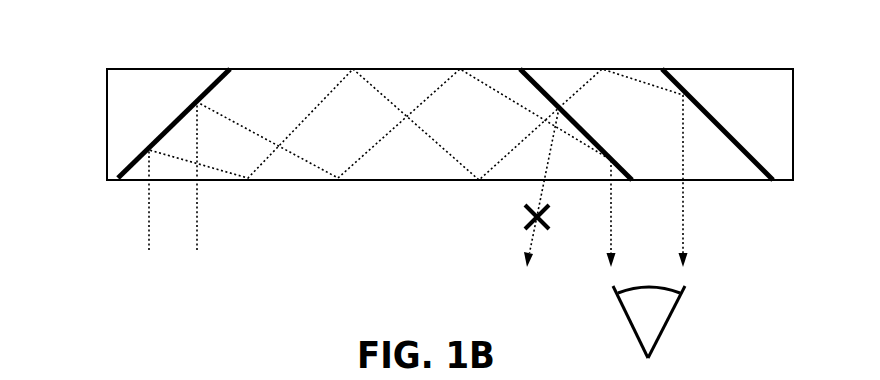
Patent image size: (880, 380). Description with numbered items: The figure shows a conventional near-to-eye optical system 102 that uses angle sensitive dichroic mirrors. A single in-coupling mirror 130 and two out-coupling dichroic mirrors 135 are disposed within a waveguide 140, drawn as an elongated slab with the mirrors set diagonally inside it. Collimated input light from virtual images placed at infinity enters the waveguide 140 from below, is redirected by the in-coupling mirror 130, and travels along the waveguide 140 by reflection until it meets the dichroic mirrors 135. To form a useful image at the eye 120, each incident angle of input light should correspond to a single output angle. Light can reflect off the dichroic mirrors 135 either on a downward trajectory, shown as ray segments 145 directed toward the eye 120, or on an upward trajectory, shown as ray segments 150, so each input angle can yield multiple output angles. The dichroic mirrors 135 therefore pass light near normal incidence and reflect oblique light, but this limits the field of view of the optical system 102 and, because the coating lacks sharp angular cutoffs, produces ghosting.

The near-to-eye optical system 102 is at (247, 278).
The eye 120 is at (665, 327).
The in-coupling mirror 130 is at (172, 123).
The out-coupling dichroic mirrors 135 is at (548, 92).
The waveguide 140 is at (280, 69).
The ray segments 145 is at (478, 80).
The ray segments 150 is at (517, 147).